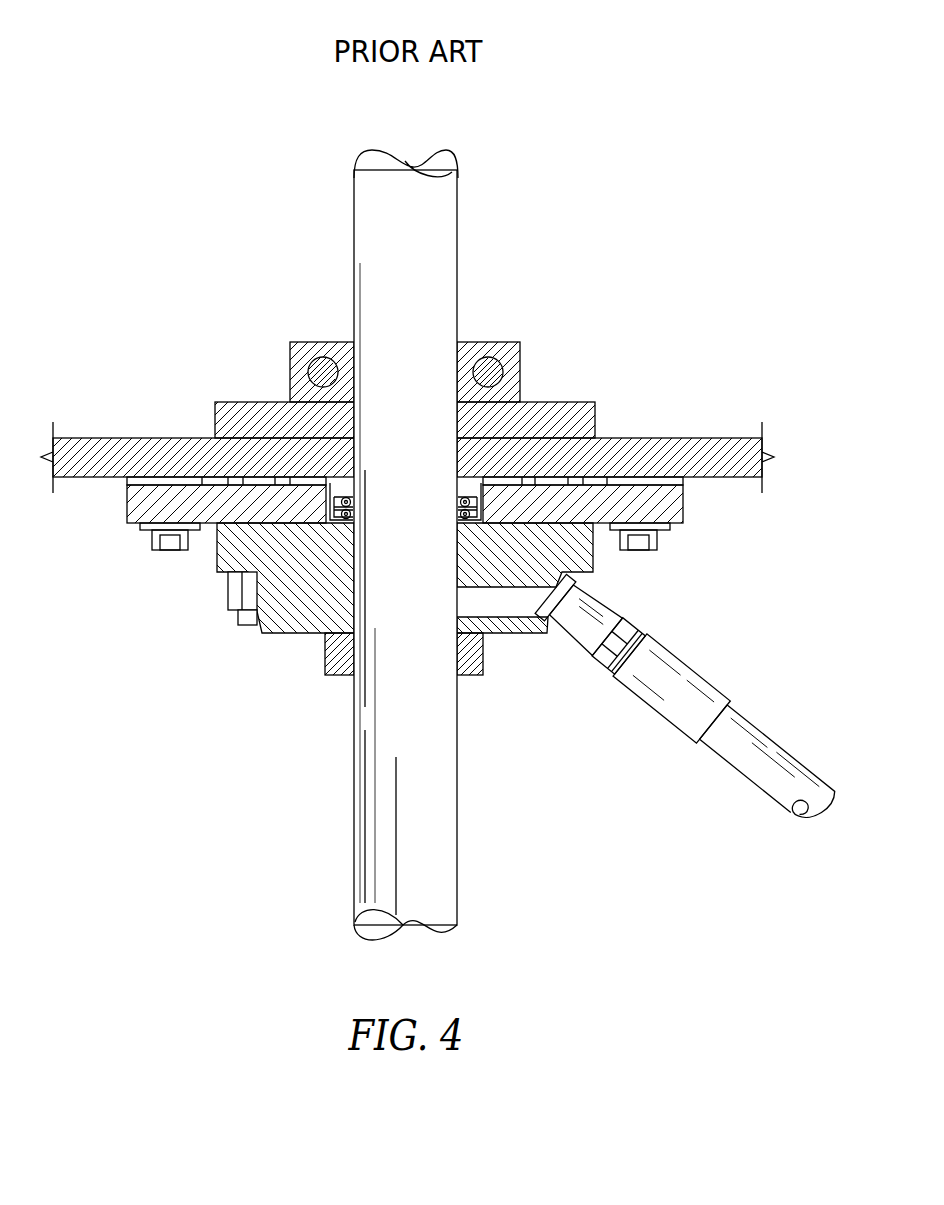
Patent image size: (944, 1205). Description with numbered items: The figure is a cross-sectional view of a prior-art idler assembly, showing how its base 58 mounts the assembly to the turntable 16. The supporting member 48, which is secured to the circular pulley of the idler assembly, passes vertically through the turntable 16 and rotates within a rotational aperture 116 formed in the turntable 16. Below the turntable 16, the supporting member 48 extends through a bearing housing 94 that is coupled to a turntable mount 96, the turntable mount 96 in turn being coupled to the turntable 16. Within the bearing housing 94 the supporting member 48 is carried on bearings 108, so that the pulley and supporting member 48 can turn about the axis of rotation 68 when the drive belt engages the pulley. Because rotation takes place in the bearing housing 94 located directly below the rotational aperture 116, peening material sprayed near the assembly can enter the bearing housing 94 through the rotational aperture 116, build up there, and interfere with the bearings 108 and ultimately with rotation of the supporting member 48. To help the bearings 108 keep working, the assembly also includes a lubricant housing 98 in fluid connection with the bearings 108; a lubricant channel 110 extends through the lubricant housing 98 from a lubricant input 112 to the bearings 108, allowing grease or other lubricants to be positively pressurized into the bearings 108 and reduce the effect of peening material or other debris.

The turntable 16 is at (726, 446).
The supporting member 48 is at (370, 225).
The base 58 is at (250, 310).
The axis of rotation 68 is at (370, 742).
The bearing housing 94 is at (601, 503).
The turntable mount 96 is at (679, 479).
The lubricant housing 98 is at (287, 612).
The bearings 108 is at (333, 492).
The lubricant channel 110 is at (497, 607).
The lubricant input 112 is at (777, 752).
The rotational aperture 116 is at (460, 330).